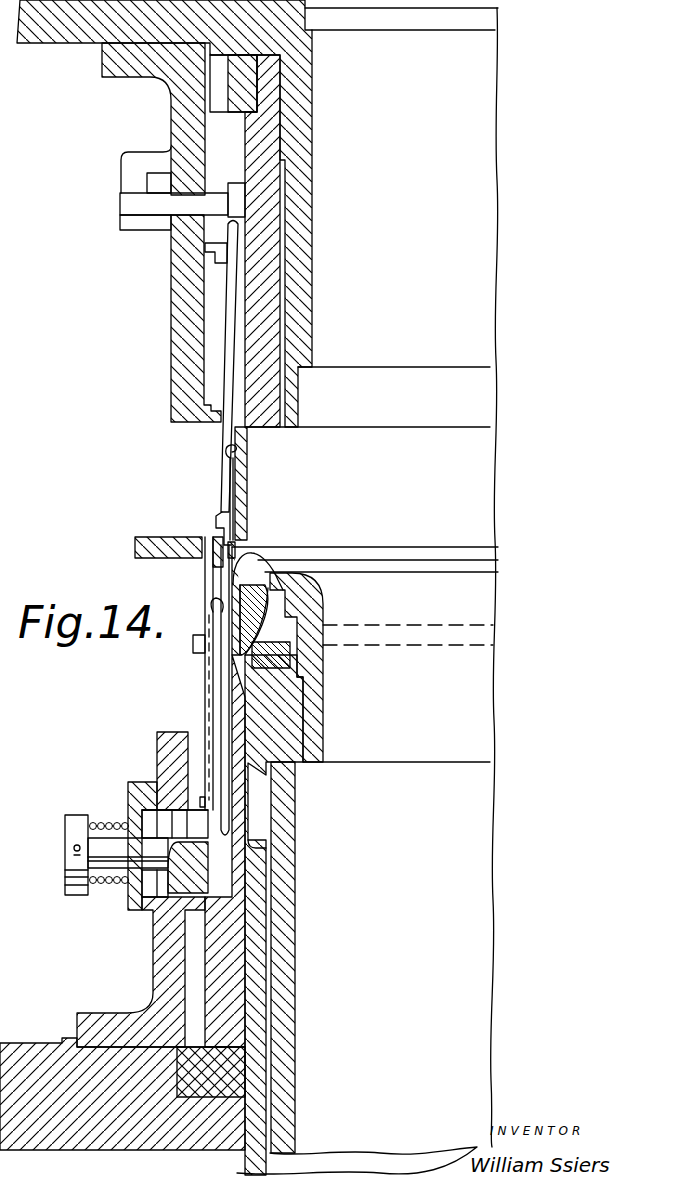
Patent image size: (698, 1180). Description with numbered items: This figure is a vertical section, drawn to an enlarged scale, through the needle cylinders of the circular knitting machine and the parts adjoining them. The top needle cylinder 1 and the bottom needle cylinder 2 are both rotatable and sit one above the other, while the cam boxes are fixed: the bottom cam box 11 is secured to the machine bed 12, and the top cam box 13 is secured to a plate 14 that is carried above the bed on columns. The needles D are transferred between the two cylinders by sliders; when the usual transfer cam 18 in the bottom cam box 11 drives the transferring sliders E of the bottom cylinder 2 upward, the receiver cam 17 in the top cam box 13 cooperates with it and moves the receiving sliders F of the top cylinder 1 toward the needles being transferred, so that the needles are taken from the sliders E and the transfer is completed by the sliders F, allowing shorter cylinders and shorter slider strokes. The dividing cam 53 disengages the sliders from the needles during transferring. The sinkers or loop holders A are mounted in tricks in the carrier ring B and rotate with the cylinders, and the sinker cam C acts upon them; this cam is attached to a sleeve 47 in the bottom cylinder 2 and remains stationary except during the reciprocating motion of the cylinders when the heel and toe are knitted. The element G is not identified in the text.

The plate 14 is at (62, 30).
The top cam box 13 is at (188, 163).
The receiver cam 17 is at (217, 217).
The top needle cylinder 1 is at (248, 280).
The receiving sliders F is at (228, 380).
The notched guide G is at (210, 423).
The dividing cam 53 is at (190, 537).
The needles D is at (238, 520).
The sinkers A is at (250, 575).
The carrier ring B is at (265, 612).
The sinker cam C is at (303, 632).
The sliders E is at (215, 692).
The transfer cam 18 is at (200, 848).
The bottom needle cylinder 2 is at (237, 898).
The bottom cam box 11 is at (163, 962).
The sleeve 47 is at (287, 985).
The machine bed 12 is at (28, 1063).